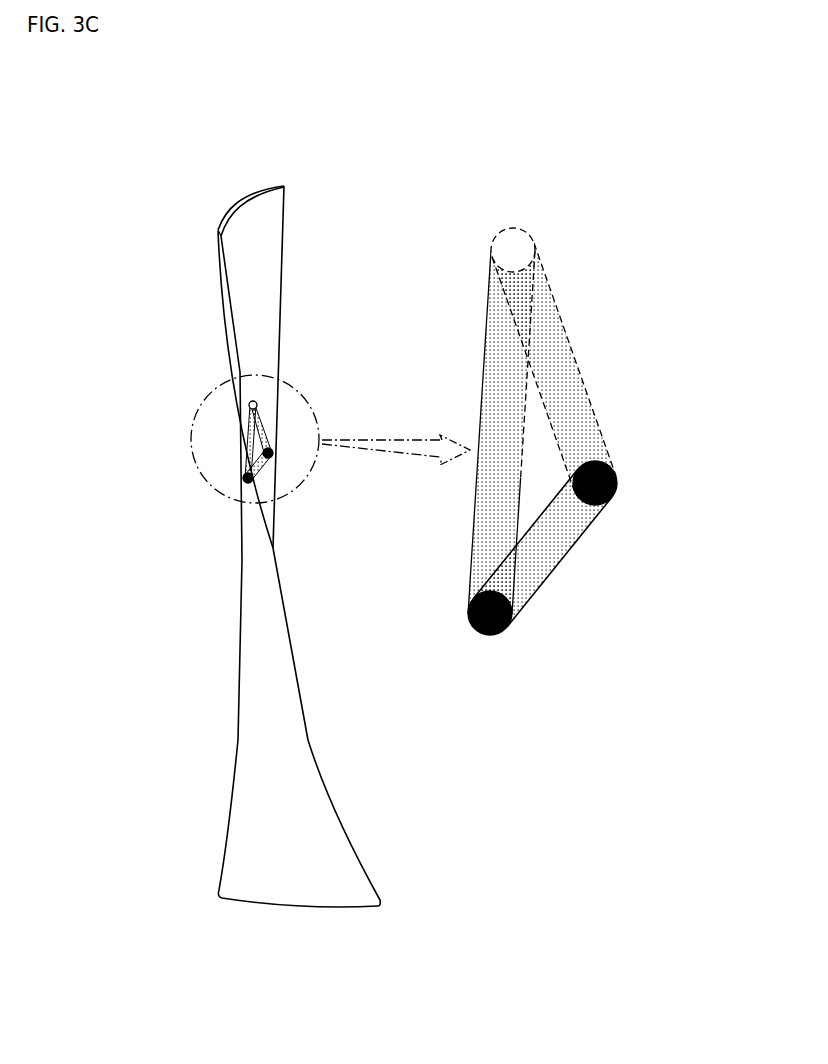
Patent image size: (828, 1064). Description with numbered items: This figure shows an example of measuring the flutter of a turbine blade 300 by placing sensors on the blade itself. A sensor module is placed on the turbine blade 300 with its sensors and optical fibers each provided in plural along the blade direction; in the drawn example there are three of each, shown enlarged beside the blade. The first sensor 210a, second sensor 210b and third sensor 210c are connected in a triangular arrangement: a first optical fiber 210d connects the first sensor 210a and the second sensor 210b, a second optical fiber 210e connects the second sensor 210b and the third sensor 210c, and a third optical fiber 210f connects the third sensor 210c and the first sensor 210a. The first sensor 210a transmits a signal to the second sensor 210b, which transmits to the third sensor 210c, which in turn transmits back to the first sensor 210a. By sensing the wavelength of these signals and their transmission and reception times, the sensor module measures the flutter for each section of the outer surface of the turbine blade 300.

The turbine blade 300 is at (408, 146).
The first sensor 210a is at (523, 252).
The second sensor 210b is at (468, 626).
The third sensor 210c is at (617, 476).
The first optical fiber 210d is at (481, 423).
The second optical fiber 210e is at (548, 568).
The third optical fiber 210f is at (565, 356).